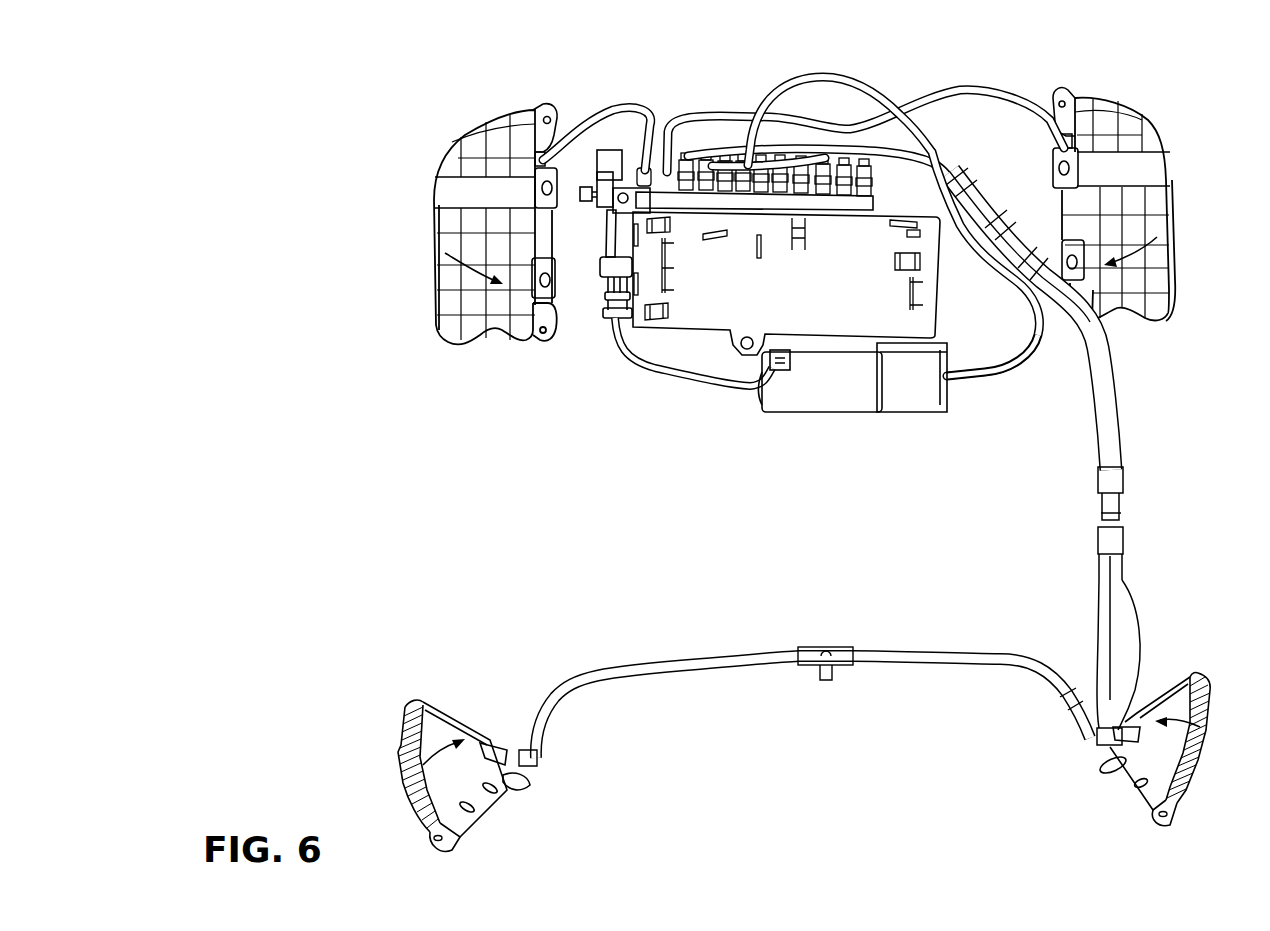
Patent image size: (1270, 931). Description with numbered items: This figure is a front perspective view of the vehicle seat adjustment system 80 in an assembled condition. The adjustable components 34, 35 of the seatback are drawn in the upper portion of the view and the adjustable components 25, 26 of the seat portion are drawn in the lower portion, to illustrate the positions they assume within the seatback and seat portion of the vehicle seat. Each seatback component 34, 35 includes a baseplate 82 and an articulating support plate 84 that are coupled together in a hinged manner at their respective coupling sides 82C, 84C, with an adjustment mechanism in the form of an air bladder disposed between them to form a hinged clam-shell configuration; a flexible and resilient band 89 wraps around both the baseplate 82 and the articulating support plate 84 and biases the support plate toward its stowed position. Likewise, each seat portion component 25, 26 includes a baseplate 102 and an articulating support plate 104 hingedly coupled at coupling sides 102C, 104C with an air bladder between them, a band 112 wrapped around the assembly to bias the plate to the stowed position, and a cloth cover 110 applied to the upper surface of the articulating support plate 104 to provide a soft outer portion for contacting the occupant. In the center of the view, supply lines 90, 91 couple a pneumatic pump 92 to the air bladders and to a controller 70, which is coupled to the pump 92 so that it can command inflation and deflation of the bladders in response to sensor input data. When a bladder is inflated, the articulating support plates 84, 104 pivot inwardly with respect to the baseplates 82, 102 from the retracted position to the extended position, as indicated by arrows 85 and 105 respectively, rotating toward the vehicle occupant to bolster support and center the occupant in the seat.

The adjustable component 25 is at (354, 706).
The adjustable component 26 is at (1213, 652).
The adjustable component 34 is at (388, 256).
The adjustable component 35 is at (1200, 223).
The controller 70 is at (717, 297).
The vehicle seat adjustment system 80 is at (509, 67).
The baseplate 82 is at (447, 147).
The coupling side 82C is at (553, 152).
The articulating support plate 84 is at (483, 143).
The coupling side 84C is at (557, 250).
The arrow 85 is at (468, 283).
The band 89 is at (463, 193).
The supply line 90 is at (605, 110).
The supply line 91 is at (703, 380).
The pneumatic pump 92 is at (840, 385).
The baseplate 102 is at (423, 827).
The coupling side 102C is at (450, 843).
The articulating support plate 104 is at (417, 707).
The coupling side 104C is at (467, 838).
The arrow 105 is at (400, 763).
The cloth cover 110 is at (457, 730).
The band 112 is at (400, 750).